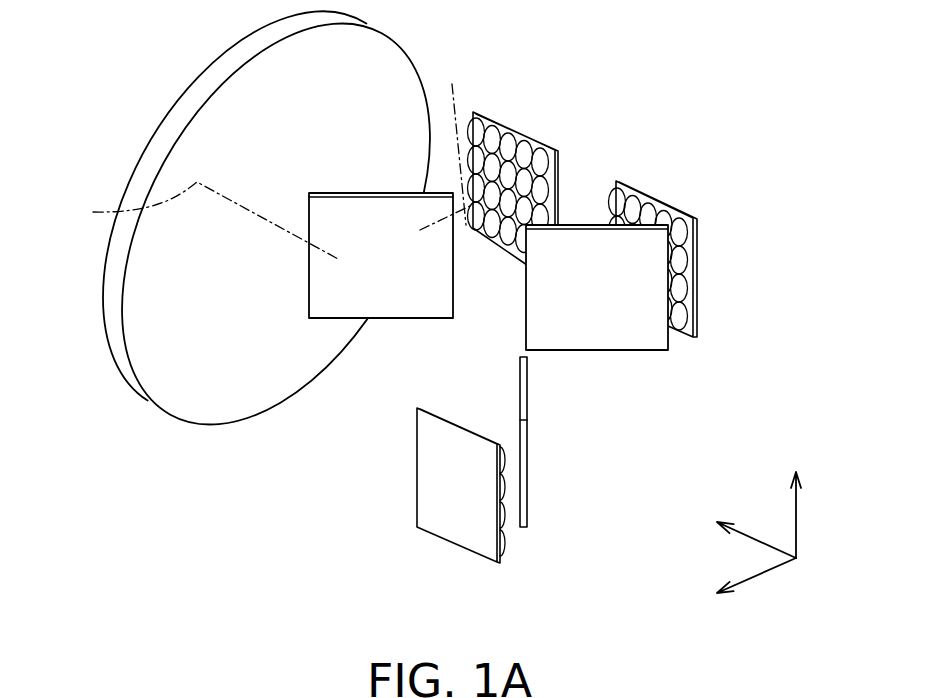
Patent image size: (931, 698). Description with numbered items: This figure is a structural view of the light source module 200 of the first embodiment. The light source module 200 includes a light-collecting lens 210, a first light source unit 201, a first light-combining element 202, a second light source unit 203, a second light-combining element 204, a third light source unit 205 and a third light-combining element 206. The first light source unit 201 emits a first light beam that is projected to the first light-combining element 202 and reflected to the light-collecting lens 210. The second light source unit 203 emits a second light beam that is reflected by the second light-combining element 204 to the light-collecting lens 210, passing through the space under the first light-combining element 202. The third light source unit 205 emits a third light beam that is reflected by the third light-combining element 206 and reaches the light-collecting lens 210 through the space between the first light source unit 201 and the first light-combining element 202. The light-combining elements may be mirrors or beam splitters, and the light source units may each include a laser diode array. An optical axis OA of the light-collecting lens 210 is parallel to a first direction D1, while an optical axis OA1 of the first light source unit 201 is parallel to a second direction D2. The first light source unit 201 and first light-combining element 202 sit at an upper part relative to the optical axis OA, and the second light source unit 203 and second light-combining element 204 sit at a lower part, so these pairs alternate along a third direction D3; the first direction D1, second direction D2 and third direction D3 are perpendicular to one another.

The light source module 200 is at (738, 27).
The light-collecting lens 210 is at (233, 97).
The first light source unit 201 is at (518, 125).
The first light-combining element 202 is at (395, 307).
The second light source unit 203 is at (453, 525).
The second light-combining element 204 is at (527, 466).
The third light source unit 205 is at (658, 197).
The third light-combining element 206 is at (617, 333).
The optical axis OA is at (265, 221).
The optical axis of the first light source unit OA1 is at (451, 138).
The first direction D1 is at (740, 528).
The second direction D2 is at (739, 595).
The third direction D3 is at (802, 496).